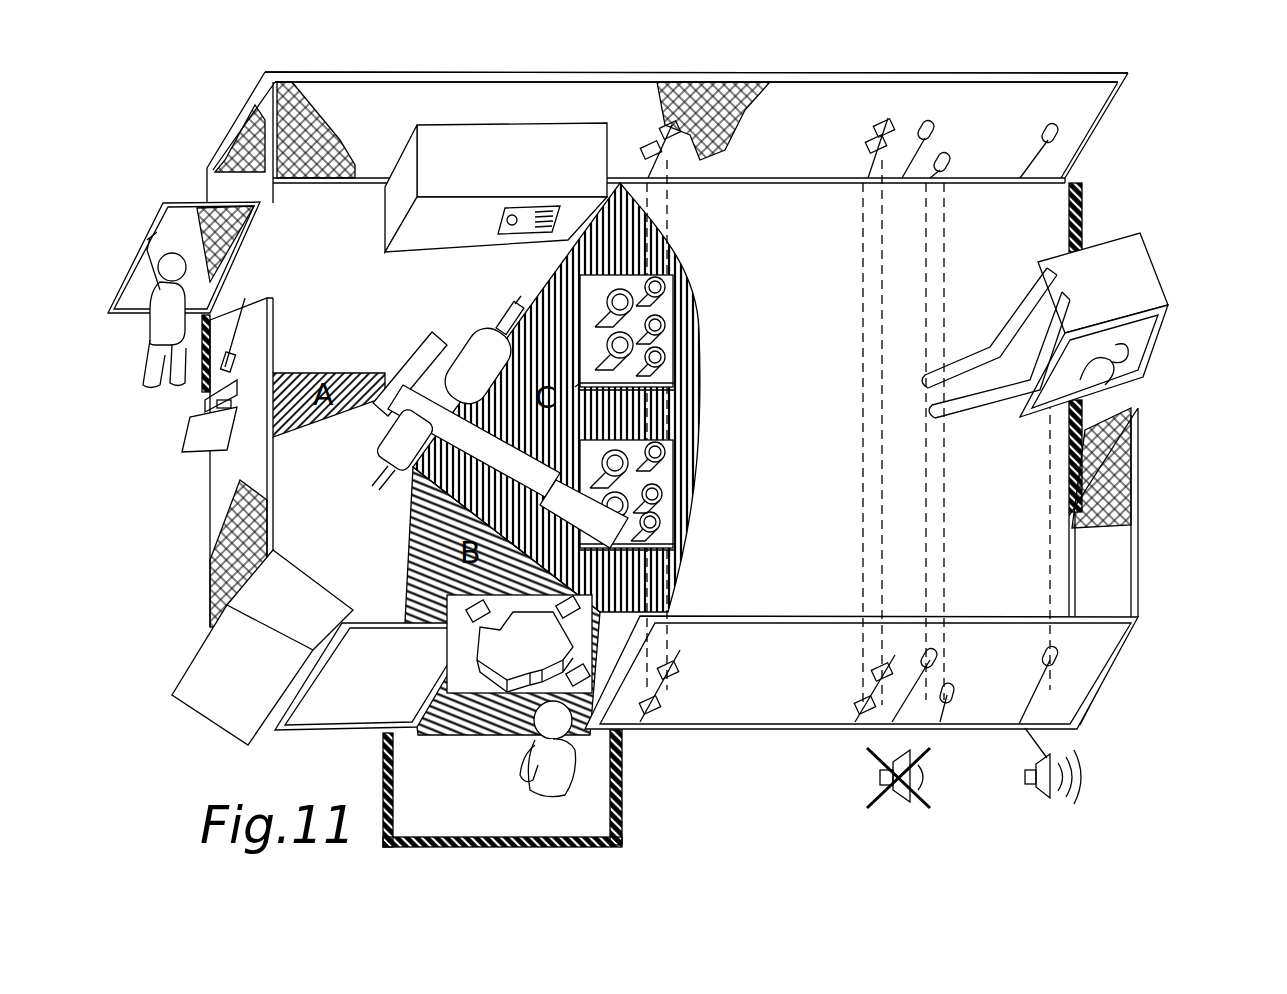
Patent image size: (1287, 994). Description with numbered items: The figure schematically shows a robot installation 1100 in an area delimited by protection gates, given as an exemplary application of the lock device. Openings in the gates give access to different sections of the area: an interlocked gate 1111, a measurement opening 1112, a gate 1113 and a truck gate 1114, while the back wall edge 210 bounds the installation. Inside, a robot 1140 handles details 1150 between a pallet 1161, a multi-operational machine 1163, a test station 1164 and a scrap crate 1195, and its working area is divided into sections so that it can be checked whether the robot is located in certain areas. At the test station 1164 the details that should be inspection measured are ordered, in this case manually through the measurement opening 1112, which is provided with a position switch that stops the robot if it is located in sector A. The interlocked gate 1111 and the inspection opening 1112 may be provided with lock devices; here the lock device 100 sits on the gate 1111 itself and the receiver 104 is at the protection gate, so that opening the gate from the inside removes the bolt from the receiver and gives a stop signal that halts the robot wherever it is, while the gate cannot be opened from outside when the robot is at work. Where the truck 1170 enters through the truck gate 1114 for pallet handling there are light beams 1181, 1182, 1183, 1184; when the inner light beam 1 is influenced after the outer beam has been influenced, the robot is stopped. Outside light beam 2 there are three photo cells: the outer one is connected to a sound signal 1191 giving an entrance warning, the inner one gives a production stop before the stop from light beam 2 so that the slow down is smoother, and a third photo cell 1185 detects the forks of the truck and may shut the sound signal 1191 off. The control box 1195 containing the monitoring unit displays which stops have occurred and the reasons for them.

The robot installation 1100 is at (146, 98).
The room ceiling edge 210 is at (1093, 73).
The truck gate 1114 is at (1108, 208).
The truck 1170 is at (1143, 288).
The multi-operational machine 1163 is at (493, 150).
The inner light beam 1 is at (674, 170).
The light beam 2 is at (841, 184).
The light beam 1181 is at (664, 215).
The light beam 1182 is at (862, 252).
The light beam 1183 is at (948, 458).
The light beam 1184 is at (1047, 550).
The third photo cell 1185 is at (950, 702).
The sound signal 1191 is at (1050, 795).
The details 1150 is at (668, 315).
The pallet 1161 is at (672, 518).
The robot 1140 is at (428, 343).
The test station 1164 is at (280, 373).
The receiver 104 is at (228, 330).
The measurement opening 1112 is at (227, 397).
The interlocked gate 1111 is at (178, 205).
The lock device 100 is at (150, 230).
The scrap crate 1195 is at (242, 658).
The gate 1113 is at (480, 690).